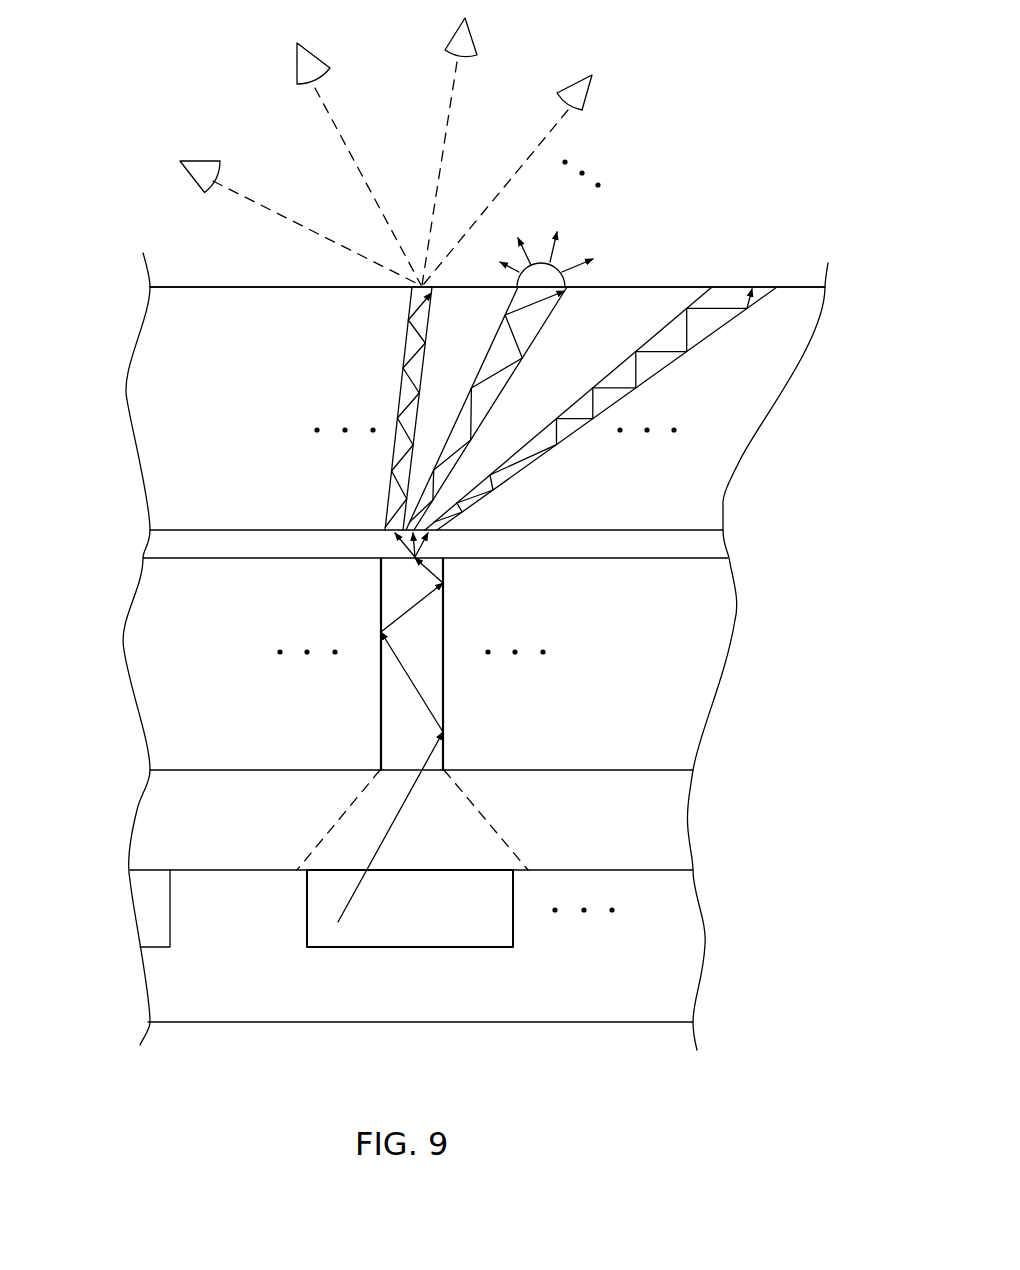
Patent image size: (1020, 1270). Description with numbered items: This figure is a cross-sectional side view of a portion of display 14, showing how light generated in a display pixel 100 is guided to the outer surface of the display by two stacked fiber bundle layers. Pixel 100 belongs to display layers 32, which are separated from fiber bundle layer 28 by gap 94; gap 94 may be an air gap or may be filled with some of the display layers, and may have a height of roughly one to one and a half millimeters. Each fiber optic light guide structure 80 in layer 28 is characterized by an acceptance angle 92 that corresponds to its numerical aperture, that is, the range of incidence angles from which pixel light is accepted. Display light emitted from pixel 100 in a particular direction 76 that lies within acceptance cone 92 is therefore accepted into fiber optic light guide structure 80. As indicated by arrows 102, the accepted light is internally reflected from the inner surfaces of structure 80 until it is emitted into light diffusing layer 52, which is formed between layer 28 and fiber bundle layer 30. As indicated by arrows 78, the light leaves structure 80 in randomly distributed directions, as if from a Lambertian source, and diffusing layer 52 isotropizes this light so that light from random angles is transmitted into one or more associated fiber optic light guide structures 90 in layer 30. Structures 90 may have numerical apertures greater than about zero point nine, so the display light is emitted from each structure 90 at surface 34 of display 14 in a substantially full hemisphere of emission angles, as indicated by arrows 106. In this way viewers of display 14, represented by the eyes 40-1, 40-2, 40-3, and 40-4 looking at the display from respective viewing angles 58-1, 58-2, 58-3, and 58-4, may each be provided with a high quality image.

The display 14 is at (731, 174).
The fiber bundle layer 28 is at (150, 659).
The fiber bundle layer 30 is at (160, 410).
The display layers 32 is at (685, 935).
The surface 34 is at (662, 287).
The viewer eye position 1 40-1 is at (203, 160).
The viewer eye position 2 40-2 is at (312, 58).
The viewer eye position 3 40-3 is at (474, 34).
The viewer eye position 4 40-4 is at (593, 94).
The light diffusing layer 52 is at (712, 543).
The viewing angle 58-1 is at (266, 208).
The viewing angle 58-2 is at (383, 142).
The viewing angle 58-3 is at (444, 161).
The viewing angle 58-4 is at (500, 188).
The direction 76 is at (392, 830).
The arrows 78 is at (430, 538).
The fiber optic light guide structure 80 is at (445, 613).
The fiber optic light guide structure 90 is at (404, 345).
The acceptance angle 92 is at (480, 820).
The gap 94 is at (668, 828).
The pixel 100 is at (421, 932).
The arrows 102 is at (422, 695).
The arrows 106 is at (552, 254).